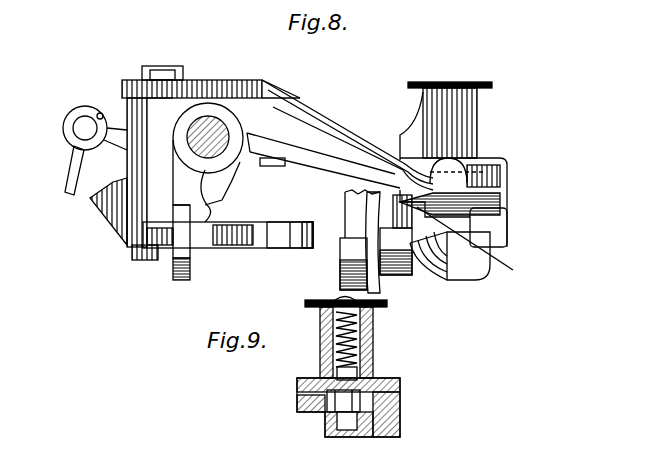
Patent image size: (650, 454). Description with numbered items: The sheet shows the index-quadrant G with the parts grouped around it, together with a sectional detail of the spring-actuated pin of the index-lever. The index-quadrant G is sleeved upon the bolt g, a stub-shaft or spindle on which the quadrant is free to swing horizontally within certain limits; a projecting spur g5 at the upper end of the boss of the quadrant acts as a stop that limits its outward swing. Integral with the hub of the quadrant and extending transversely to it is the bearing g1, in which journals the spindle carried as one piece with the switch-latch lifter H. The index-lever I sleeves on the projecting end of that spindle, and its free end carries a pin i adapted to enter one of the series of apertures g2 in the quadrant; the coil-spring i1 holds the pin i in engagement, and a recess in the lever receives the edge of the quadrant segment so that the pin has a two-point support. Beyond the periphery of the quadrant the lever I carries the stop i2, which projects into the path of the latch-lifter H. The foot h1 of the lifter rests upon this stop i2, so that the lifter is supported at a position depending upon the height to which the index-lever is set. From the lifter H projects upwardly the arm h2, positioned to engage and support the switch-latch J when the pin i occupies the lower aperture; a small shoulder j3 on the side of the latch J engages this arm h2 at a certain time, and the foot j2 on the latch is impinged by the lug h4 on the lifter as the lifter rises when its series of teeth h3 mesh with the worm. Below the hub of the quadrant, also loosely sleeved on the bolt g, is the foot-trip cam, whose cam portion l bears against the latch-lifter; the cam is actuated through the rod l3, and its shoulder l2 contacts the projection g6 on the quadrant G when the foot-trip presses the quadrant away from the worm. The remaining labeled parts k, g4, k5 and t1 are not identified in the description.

In FIG. 8, the clamping screw head k is at (172, 80).
In FIG. 8, the bolt g is at (207, 120).
In FIG. 8, the bearing g1 is at (148, 162).
In FIG. 8, the lever body g4 is at (206, 172).
In FIG. 8, the projecting spur g5 is at (250, 107).
In FIG. 8, the projection g6 is at (271, 172).
In FIG. 8, the index-quadrant G is at (318, 163).
In FIG. 9, the index-quadrant G is at (300, 412).
In FIG. 8, the index-lever I is at (362, 106).
In FIG. 9, the index-lever I is at (297, 390).
In FIG. 8, the pivot ring t1 is at (85, 122).
In FIG. 8, the rod l3 is at (70, 182).
In FIG. 8, the cam portion l is at (110, 208).
In FIG. 8, the shoulder l2 is at (215, 208).
In FIG. 8, the nut block k5 is at (153, 257).
In FIG. 8, the pin i is at (448, 82).
In FIG. 9, the pin i is at (383, 380).
In FIG. 9, the coil-spring i1 is at (373, 345).
In FIG. 8, the stop i2 is at (503, 213).
In FIG. 8, the switch-latch lifter H is at (265, 237).
In FIG. 8, the foot h1 is at (480, 238).
In FIG. 8, the arm h2 is at (298, 240).
In FIG. 8, the series of teeth h3 is at (457, 268).
In FIG. 8, the lug h4 is at (466, 234).
In FIG. 8, the switch-latch J is at (345, 195).
In FIG. 8, the foot j2 is at (398, 267).
In FIG. 8, the small shoulder j3 is at (347, 267).
In FIG. 9, the apertures g2 is at (322, 418).